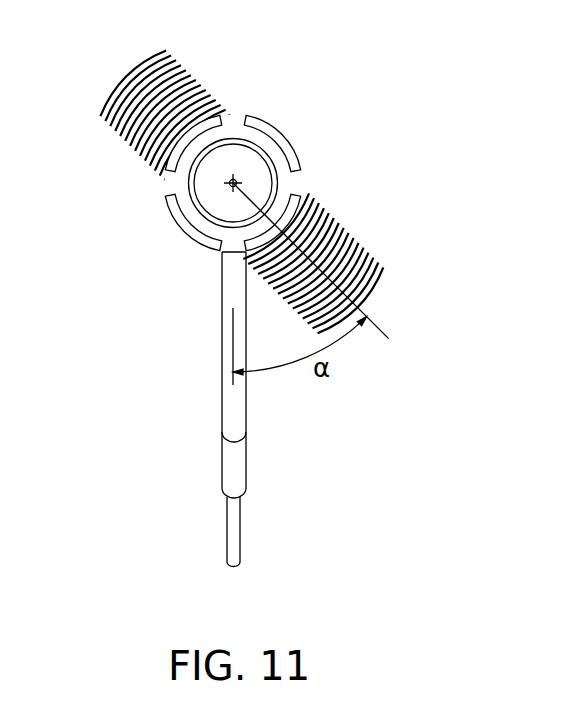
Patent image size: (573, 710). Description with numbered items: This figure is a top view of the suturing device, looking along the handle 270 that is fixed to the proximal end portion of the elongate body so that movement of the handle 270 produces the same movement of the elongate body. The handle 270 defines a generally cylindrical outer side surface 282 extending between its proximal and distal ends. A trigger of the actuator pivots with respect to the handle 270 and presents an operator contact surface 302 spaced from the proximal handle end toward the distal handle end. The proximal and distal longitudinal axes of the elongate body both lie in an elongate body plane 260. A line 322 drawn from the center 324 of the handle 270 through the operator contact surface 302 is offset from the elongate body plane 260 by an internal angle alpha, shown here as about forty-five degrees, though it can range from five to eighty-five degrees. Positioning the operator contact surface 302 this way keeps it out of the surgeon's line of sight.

The elongate body plane 260 is at (233, 348).
The handle 270 is at (290, 183).
The outer side surface 282 is at (288, 139).
The operator contact surface 302 is at (358, 248).
The line 322 is at (379, 325).
The center 324 is at (236, 183).